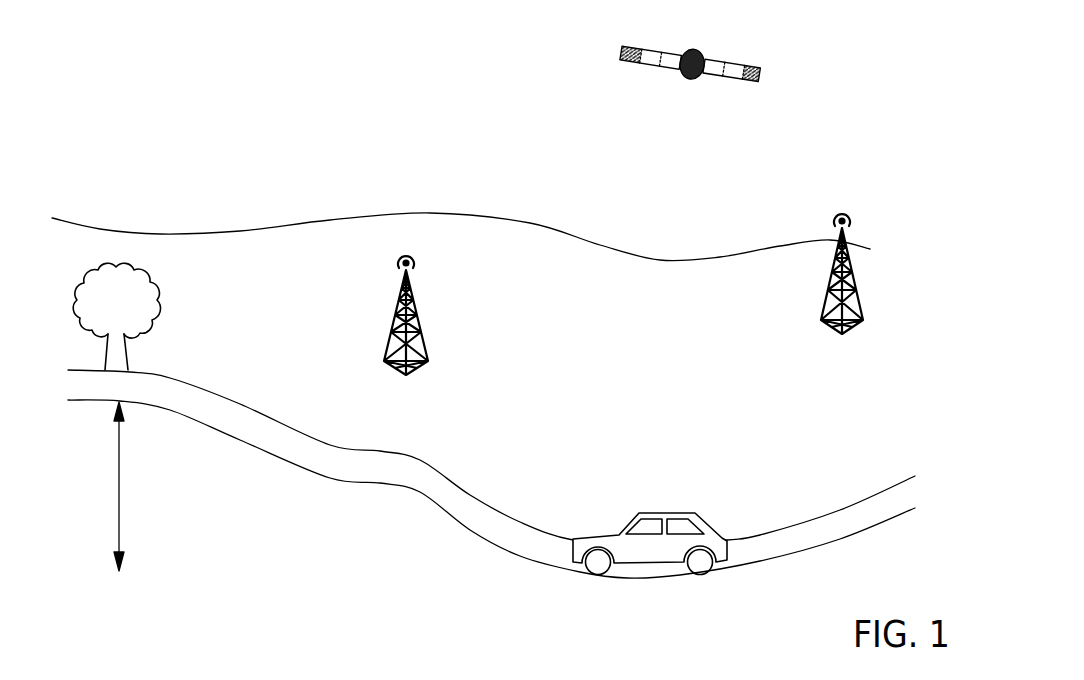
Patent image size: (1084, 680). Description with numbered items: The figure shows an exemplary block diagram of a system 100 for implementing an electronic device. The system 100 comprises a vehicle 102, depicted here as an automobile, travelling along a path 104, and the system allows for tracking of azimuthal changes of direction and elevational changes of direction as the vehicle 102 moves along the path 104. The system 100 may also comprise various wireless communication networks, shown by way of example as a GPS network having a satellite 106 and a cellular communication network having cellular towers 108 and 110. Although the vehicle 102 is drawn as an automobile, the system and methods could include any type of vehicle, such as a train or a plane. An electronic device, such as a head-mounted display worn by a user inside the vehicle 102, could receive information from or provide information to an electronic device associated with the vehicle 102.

The system 100 is at (348, 534).
The vehicle 102 is at (711, 521).
The path 104 is at (474, 493).
The satellite 106 is at (747, 64).
The cellular tower 108 is at (409, 255).
The cellular tower 110 is at (848, 213).